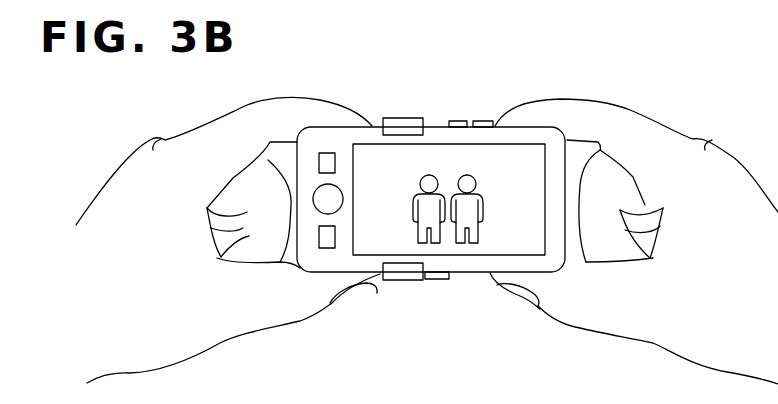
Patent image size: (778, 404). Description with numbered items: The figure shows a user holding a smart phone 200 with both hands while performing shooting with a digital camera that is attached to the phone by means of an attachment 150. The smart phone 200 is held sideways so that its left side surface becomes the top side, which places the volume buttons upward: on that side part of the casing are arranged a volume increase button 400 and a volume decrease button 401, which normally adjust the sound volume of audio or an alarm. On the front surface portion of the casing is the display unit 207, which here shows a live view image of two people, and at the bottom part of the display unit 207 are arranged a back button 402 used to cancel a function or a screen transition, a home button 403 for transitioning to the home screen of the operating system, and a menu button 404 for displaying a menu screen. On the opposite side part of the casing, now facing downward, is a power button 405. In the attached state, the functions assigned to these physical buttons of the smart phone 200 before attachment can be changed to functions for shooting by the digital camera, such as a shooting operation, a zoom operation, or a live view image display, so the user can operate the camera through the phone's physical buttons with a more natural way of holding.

The attachment 150 is at (403, 118).
The smart phone 200 is at (567, 165).
The display unit 207 is at (492, 242).
The volume increase button 400 is at (490, 121).
The volume decrease button 401 is at (457, 121).
The back button 402 is at (330, 152).
The home button 403 is at (313, 185).
The menu button 404 is at (327, 248).
The power button 405 is at (437, 279).